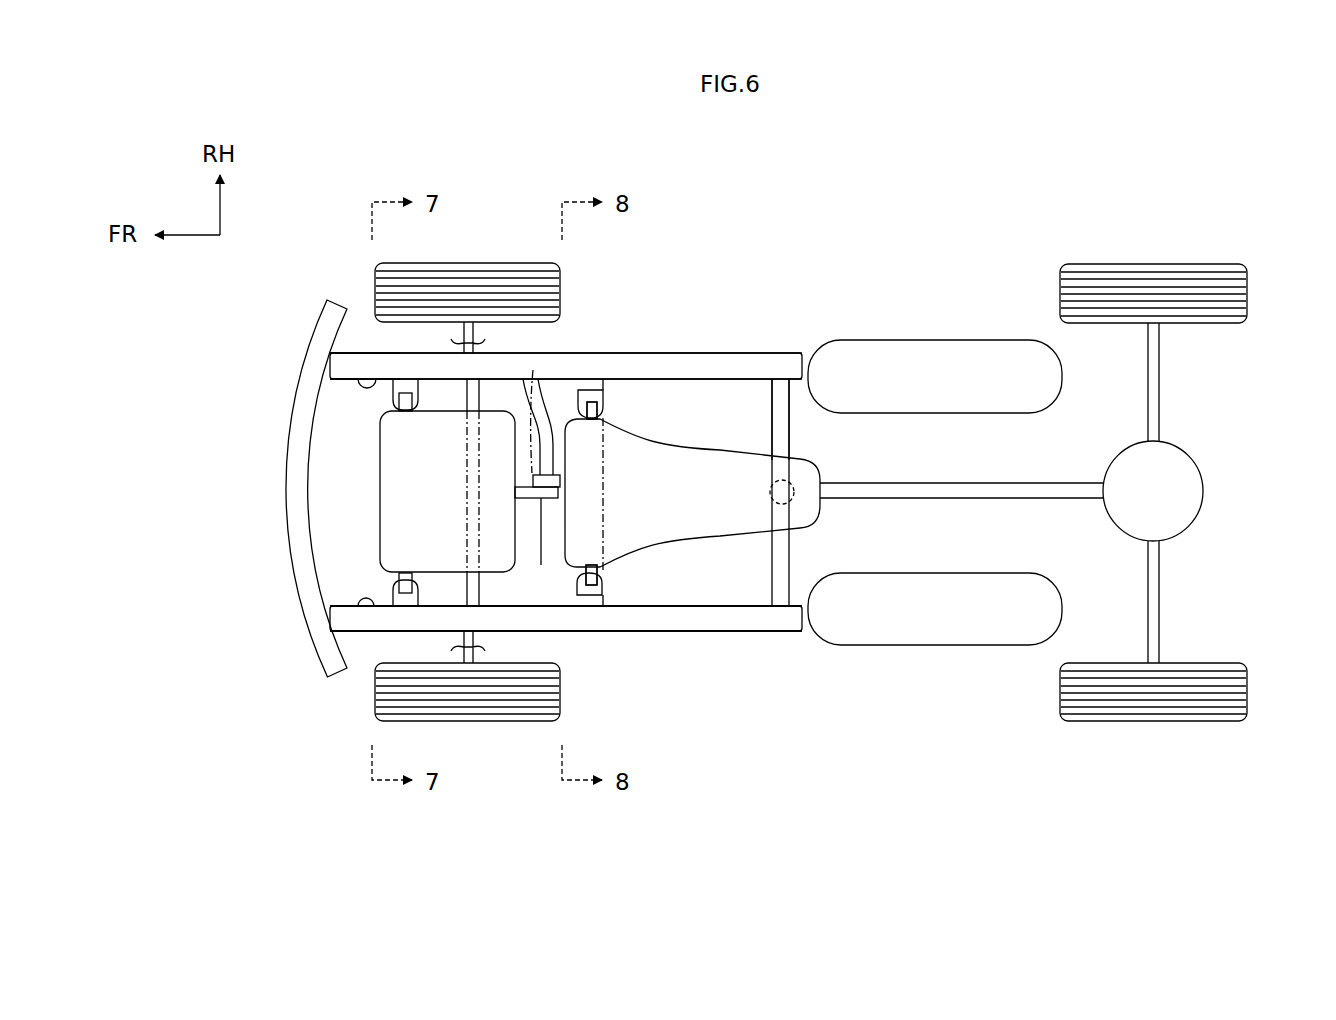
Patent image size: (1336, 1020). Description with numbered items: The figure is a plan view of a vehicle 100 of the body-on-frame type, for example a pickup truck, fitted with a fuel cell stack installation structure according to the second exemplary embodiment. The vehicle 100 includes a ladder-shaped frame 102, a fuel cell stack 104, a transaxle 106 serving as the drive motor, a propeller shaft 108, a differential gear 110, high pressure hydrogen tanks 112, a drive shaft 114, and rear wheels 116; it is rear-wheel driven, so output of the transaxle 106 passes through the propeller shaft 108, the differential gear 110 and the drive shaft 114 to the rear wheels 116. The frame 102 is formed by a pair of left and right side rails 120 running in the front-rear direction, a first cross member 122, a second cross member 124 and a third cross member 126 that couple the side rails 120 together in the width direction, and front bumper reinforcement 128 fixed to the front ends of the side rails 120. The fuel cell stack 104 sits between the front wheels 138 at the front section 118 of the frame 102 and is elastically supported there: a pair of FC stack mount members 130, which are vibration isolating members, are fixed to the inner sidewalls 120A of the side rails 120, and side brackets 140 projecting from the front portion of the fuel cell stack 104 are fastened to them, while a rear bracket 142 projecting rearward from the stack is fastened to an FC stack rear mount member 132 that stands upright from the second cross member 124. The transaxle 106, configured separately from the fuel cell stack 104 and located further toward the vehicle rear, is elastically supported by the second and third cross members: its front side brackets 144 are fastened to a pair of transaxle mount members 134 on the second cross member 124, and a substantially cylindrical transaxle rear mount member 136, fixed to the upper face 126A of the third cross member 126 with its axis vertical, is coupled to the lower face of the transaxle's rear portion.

The vehicle 100 is at (917, 220).
The frame 102 is at (736, 350).
The fuel cell stack 104 is at (380, 496).
The transaxle 106 is at (708, 447).
The propeller shaft 108 is at (965, 500).
The differential gear 110 is at (1205, 494).
The high pressure hydrogen tanks 112 is at (960, 340).
The drive shaft 114 is at (1162, 410).
The rear wheels 116 is at (1060, 280).
The front section 118 is at (705, 632).
The side rails 120 is at (783, 350).
The sidewalls 120A is at (372, 380).
The first cross member 122 is at (490, 591).
The second cross member 124 is at (604, 600).
The third cross member 126 is at (796, 612).
The upper face 126A is at (790, 421).
The front bumper reinforcement 128 is at (292, 582).
The FC stack mount members 130 is at (368, 390).
The FC stack rear mount member 132 is at (553, 474).
The transaxle mount members 134 is at (590, 391).
The transaxle rear mount member 136 is at (800, 500).
The front wheels 138 is at (505, 262).
The side brackets 140 is at (398, 412).
The rear bracket 142 is at (533, 432).
The side brackets 144 is at (606, 394).